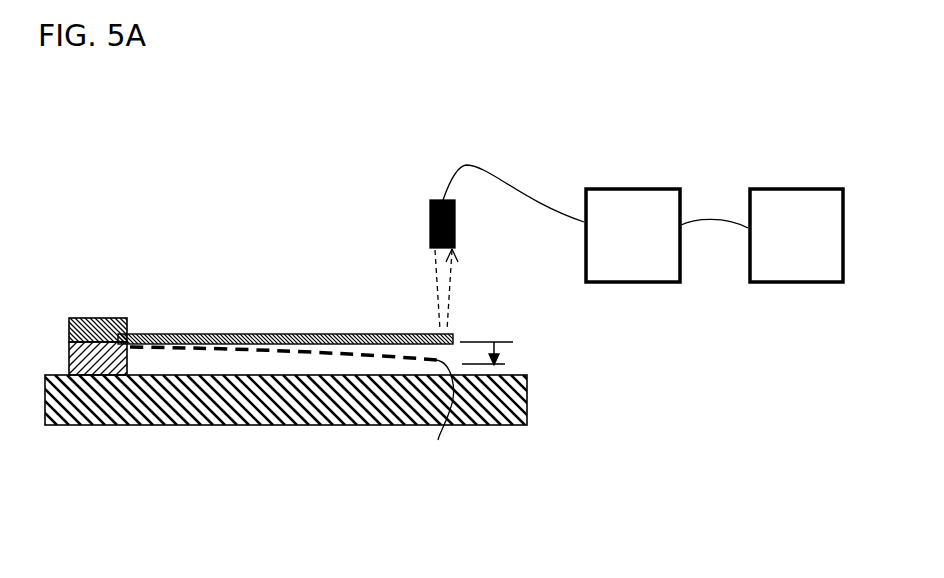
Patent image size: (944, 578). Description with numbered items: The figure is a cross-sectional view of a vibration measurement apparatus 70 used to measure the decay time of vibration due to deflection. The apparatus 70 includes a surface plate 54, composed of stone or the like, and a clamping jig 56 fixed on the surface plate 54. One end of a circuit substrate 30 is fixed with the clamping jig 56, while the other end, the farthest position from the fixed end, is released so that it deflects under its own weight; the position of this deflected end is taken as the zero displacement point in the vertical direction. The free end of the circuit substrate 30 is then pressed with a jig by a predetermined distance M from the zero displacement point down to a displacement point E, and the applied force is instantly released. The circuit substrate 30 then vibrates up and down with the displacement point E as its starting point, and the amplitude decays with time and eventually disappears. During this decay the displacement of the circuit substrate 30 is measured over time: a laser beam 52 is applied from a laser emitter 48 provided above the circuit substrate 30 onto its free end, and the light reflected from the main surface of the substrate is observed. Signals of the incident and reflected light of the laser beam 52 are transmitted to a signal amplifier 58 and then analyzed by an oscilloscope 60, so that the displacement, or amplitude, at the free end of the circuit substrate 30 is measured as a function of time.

The vibration measurement apparatus 70 is at (243, 158).
The surface plate 54 is at (500, 400).
The clamping jig 56 is at (101, 318).
The circuit substrate 30 is at (258, 332).
The laser emitter 48 is at (430, 206).
The laser beam 52 is at (437, 280).
The signal amplifier 58 is at (620, 200).
The oscilloscope 60 is at (787, 200).
The predetermined distance M is at (497, 343).
The displacement point E is at (448, 422).